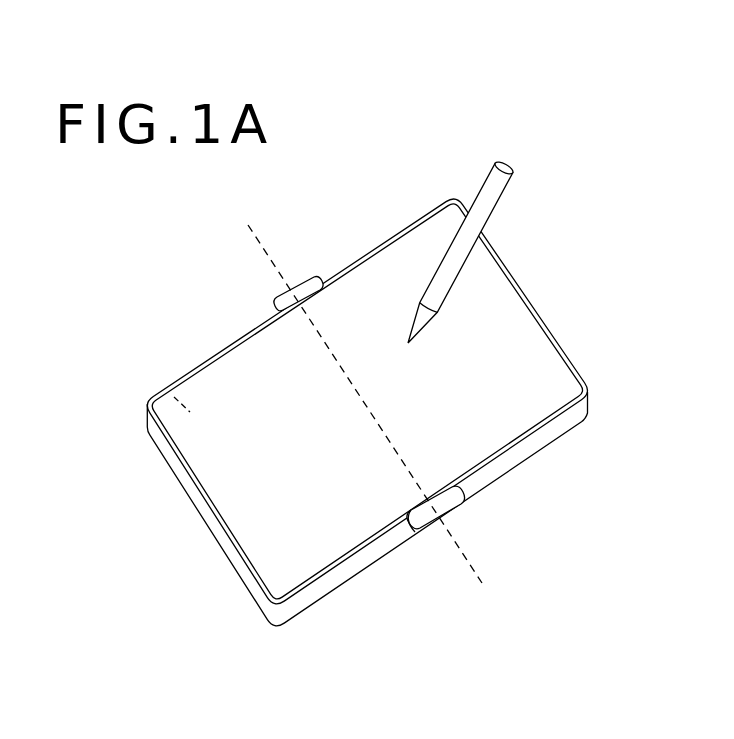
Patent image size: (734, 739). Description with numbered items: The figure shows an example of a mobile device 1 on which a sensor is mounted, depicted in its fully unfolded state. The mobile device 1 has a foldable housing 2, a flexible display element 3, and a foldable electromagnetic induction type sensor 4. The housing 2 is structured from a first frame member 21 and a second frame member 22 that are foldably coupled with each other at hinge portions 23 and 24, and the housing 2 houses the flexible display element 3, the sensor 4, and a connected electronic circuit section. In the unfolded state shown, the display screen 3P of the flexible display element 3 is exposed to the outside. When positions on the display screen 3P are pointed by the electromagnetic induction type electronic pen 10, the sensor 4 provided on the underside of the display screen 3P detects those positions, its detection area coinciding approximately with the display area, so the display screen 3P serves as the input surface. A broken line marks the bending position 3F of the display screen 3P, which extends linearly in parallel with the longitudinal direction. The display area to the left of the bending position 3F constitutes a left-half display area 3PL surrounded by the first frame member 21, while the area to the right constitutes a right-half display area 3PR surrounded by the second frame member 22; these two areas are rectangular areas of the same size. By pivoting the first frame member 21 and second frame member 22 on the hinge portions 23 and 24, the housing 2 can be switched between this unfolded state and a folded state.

The mobile device 1 is at (419, 403).
The housing 2 is at (258, 598).
The flexible display element 3 is at (212, 380).
The bending position 3F is at (252, 232).
The display screen 3P is at (641, 288).
The left-half display area 3PL is at (365, 445).
The right-half display area 3PR is at (547, 362).
The electromagnetic induction type sensor 4 is at (171, 398).
The electronic pen 10 is at (510, 183).
The first frame member 21 is at (248, 578).
The second frame member 22 is at (573, 413).
The hinge portion 23 is at (420, 542).
The hinge portion 24 is at (273, 300).